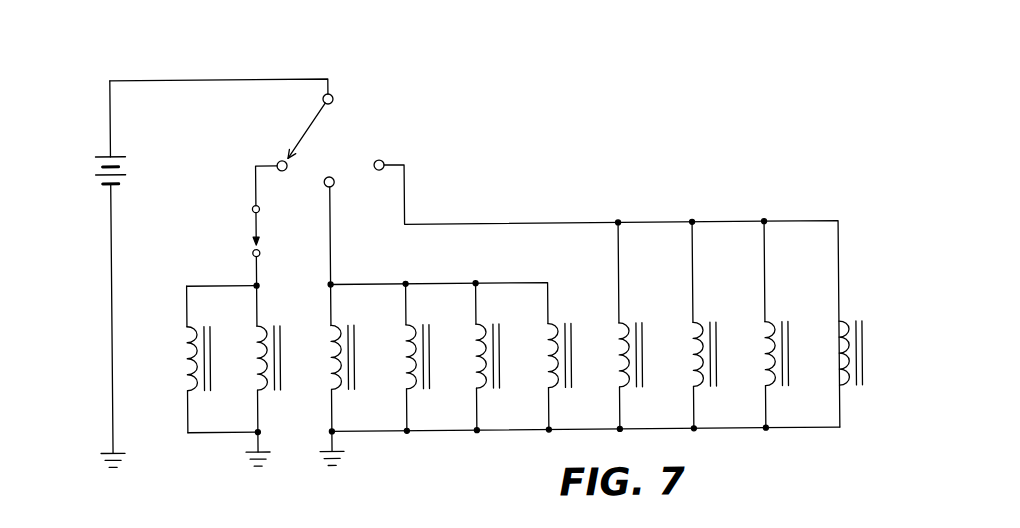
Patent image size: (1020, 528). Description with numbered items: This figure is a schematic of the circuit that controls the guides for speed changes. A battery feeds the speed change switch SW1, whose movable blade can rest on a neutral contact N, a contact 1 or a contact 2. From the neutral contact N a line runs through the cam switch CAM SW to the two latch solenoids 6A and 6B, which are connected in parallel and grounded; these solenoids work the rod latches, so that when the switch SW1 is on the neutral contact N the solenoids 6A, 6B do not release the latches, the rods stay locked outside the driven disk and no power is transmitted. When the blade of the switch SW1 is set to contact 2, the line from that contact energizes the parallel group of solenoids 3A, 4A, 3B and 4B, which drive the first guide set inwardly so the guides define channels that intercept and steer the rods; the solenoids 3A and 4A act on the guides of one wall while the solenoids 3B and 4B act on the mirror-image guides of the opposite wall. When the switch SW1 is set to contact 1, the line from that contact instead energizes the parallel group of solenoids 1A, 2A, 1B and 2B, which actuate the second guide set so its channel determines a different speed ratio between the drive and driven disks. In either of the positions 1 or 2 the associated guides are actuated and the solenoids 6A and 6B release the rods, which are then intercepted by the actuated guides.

The speed change switch SW1 is at (335, 96).
The neutral position N is at (282, 179).
The position 1 is at (382, 175).
The position 2 is at (335, 194).
The cam switch CAM SW is at (234, 231).
The solenoid 6A is at (182, 359).
The solenoid 6B is at (253, 358).
The solenoid 3A is at (328, 357).
The solenoid 4A is at (402, 357).
The solenoid 3B is at (473, 356).
The solenoid 4B is at (544, 355).
The solenoid 1A is at (617, 355).
The solenoid 2A is at (689, 354).
The solenoid 1B is at (765, 353).
The solenoid 2B is at (837, 353).